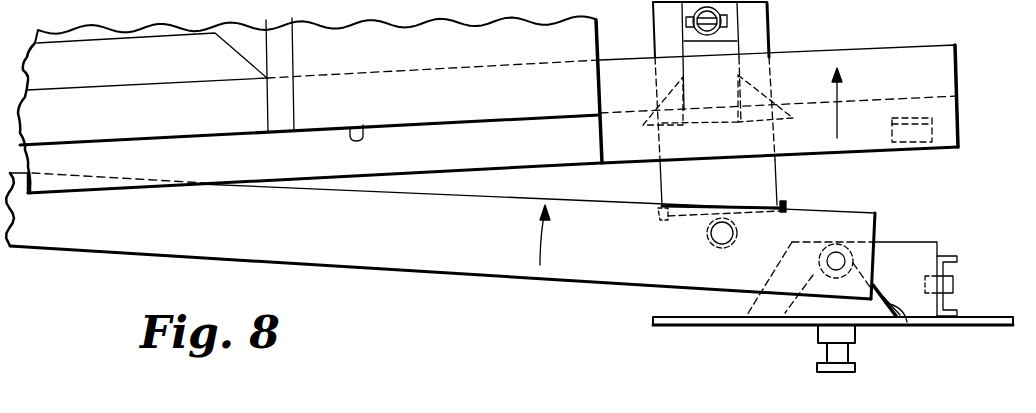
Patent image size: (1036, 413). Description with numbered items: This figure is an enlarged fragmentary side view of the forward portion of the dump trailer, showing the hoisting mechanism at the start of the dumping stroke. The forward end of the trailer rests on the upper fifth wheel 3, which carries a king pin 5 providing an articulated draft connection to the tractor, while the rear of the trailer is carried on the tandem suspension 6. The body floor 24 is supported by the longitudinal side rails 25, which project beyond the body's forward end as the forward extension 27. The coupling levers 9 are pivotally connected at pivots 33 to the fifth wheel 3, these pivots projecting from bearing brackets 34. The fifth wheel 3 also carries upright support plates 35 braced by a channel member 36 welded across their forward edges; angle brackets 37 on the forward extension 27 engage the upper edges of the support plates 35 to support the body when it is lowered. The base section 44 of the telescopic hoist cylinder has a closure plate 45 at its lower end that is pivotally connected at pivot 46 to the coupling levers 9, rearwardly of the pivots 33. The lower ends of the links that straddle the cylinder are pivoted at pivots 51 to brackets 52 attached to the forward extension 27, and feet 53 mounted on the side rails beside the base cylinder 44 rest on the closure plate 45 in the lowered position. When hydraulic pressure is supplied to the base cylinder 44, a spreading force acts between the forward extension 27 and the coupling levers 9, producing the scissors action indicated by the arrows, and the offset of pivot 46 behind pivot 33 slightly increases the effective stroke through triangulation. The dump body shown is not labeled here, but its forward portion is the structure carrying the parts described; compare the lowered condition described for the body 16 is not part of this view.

The upper fifth wheel 3 is at (979, 326).
The king pin 5 is at (830, 355).
The tandem spring suspension 6 is at (30, 0).
The coupling levers 9 is at (408, 255).
The camera body 16 is at (50, 57).
The floor 24 is at (363, 125).
The longitudinal side rails 25 is at (289, 160).
The forward extension of side rails 27 is at (883, 57).
The pivots 33 is at (836, 260).
The bearing brackets 34 is at (907, 322).
The upright support plates 35 is at (915, 253).
The channel member 36 is at (948, 254).
The angle brackets 37 is at (910, 117).
The base section of hoist cylinder 44 is at (757, 14).
The closure plate 45 is at (668, 220).
The pivot of hoist cylinder 46 is at (722, 233).
The lower link pivots 51 is at (652, 12).
The brackets 52 is at (692, 41).
The feet 53 is at (670, 97).